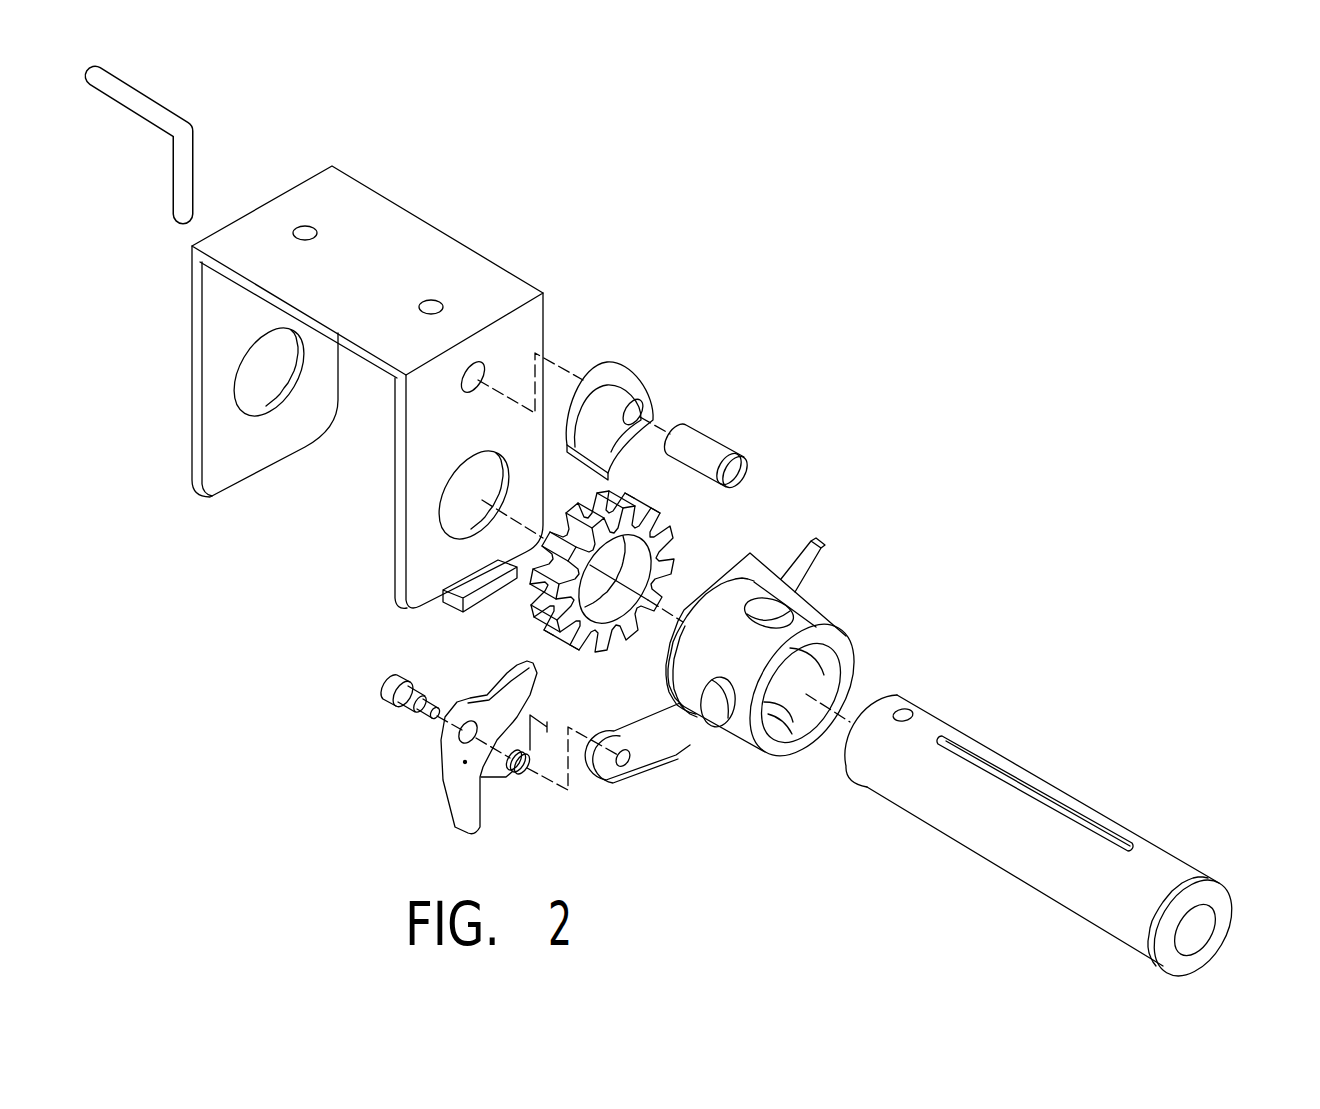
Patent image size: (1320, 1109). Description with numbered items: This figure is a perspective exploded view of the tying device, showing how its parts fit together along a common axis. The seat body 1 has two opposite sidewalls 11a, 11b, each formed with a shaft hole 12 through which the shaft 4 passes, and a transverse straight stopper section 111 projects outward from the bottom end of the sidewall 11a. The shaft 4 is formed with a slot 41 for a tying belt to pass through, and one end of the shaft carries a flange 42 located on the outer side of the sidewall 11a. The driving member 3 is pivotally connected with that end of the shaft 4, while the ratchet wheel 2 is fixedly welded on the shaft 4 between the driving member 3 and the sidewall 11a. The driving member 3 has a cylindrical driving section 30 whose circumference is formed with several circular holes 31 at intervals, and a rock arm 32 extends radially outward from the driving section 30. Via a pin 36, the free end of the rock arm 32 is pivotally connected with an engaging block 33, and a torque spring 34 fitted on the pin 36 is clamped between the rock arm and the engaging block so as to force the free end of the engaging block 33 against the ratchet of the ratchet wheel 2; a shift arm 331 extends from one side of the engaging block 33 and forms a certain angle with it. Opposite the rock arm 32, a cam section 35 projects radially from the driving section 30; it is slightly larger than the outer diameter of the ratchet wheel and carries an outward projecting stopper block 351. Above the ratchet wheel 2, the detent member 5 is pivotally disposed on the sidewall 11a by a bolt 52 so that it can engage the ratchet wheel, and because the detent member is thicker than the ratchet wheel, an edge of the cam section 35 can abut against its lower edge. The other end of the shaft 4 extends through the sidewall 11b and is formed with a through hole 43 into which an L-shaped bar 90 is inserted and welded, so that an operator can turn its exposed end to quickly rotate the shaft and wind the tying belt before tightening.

The seat body 1 is at (353, 405).
The sidewall 11a is at (513, 331).
The sidewall 11b is at (218, 312).
The shaft hole 12 is at (258, 373).
The transverse straight stopper section 111 is at (445, 590).
The ratchet wheel 2 is at (680, 540).
The driving member 3 is at (649, 667).
The cylindrical driving section 30 is at (852, 655).
The circular holes 31 is at (704, 730).
The rock arm 32 is at (650, 748).
The engaging block 33 is at (495, 698).
The shift arm 331 is at (468, 810).
The torque spring 34 is at (522, 773).
The cam section 35 is at (779, 550).
The stopper block 351 is at (822, 545).
The pin 36 is at (407, 703).
The shaft 4 is at (1080, 812).
The slot 41 is at (1050, 803).
The flange 42 is at (1222, 897).
The through hole 43 is at (906, 707).
The detent member 5 is at (615, 388).
The bolt 52 is at (705, 453).
The L-shaped bar 90 is at (157, 107).